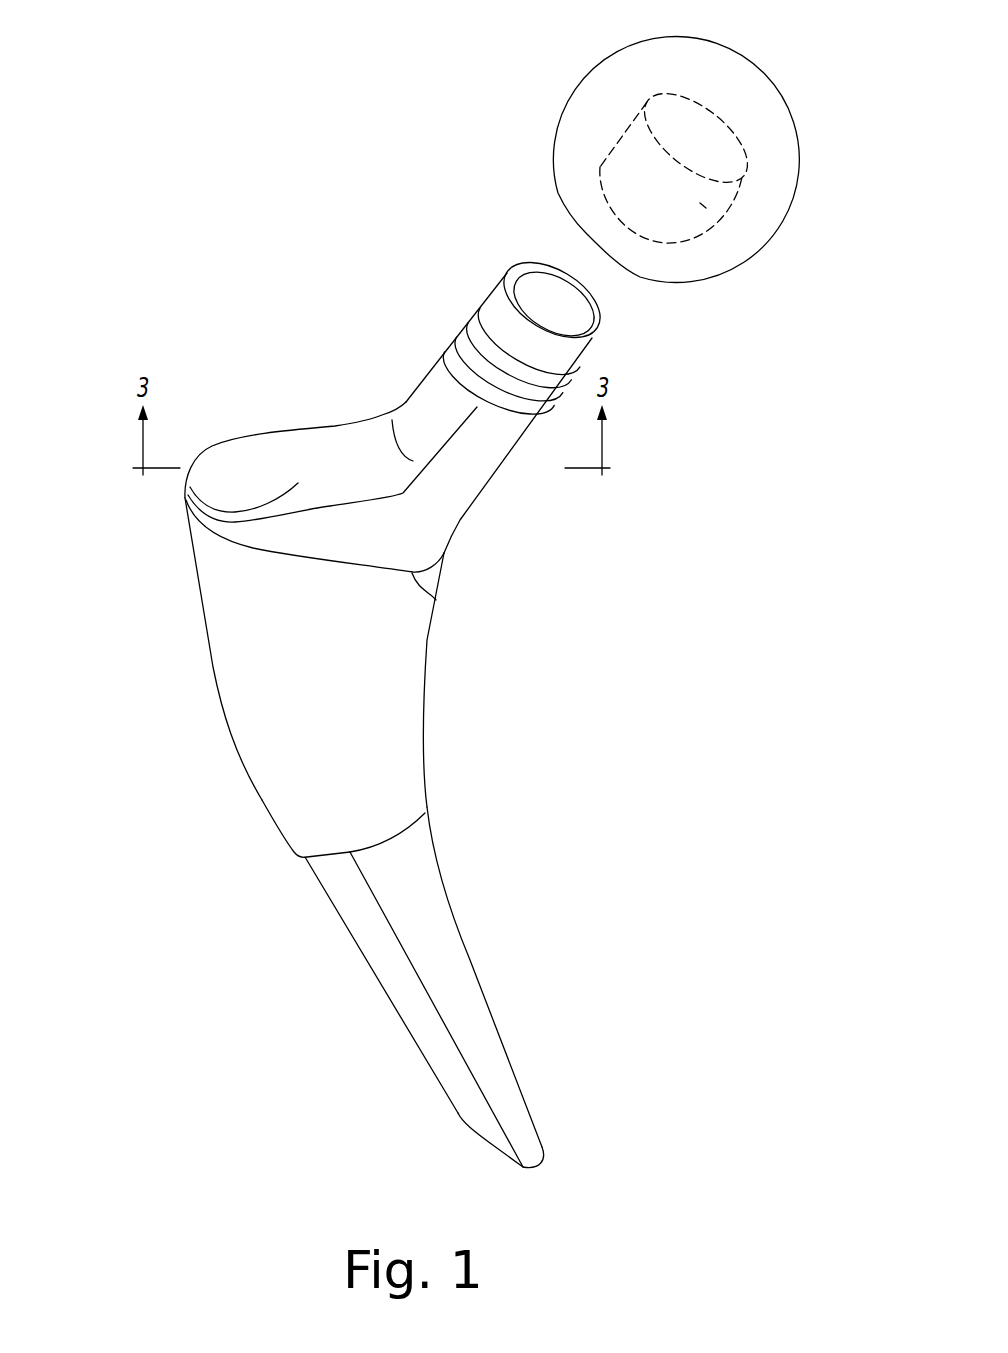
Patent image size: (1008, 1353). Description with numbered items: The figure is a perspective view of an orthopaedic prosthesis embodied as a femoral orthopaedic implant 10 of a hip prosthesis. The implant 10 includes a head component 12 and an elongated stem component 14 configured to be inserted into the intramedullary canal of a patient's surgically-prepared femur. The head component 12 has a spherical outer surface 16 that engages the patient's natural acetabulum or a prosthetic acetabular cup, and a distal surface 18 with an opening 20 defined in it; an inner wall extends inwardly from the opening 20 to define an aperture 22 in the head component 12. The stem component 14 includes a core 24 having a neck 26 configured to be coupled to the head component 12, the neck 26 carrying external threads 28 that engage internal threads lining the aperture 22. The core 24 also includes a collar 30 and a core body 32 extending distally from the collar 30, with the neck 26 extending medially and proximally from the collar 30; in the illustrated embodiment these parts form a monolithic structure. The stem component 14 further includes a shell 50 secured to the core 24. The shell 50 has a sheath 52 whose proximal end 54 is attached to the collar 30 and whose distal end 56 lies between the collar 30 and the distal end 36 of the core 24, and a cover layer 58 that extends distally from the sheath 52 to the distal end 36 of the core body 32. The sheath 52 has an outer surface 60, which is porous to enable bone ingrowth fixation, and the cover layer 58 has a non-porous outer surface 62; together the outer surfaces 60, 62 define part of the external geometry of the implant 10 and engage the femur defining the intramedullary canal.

The femoral orthopaedic implant 10 is at (156, 186).
The head component 12 is at (669, 173).
The stem component 14 is at (580, 722).
The spherical outer surface 16 is at (758, 62).
The distal surface 18 is at (565, 220).
The opening 20 is at (650, 243).
The aperture 22 is at (703, 205).
The core 24 is at (480, 457).
The neck 26 is at (517, 420).
The external threads 28 is at (498, 302).
The collar 30 is at (433, 550).
The core body 32 is at (450, 950).
The distal end 36 is at (535, 1148).
The shell 50 is at (410, 668).
The sheath 52 is at (243, 727).
The proximal end 54 is at (436, 600).
The distal end 56 is at (410, 813).
The cover layer 58 is at (423, 1027).
The outer surface 60 is at (290, 815).
The outer surface 62 is at (446, 1070).